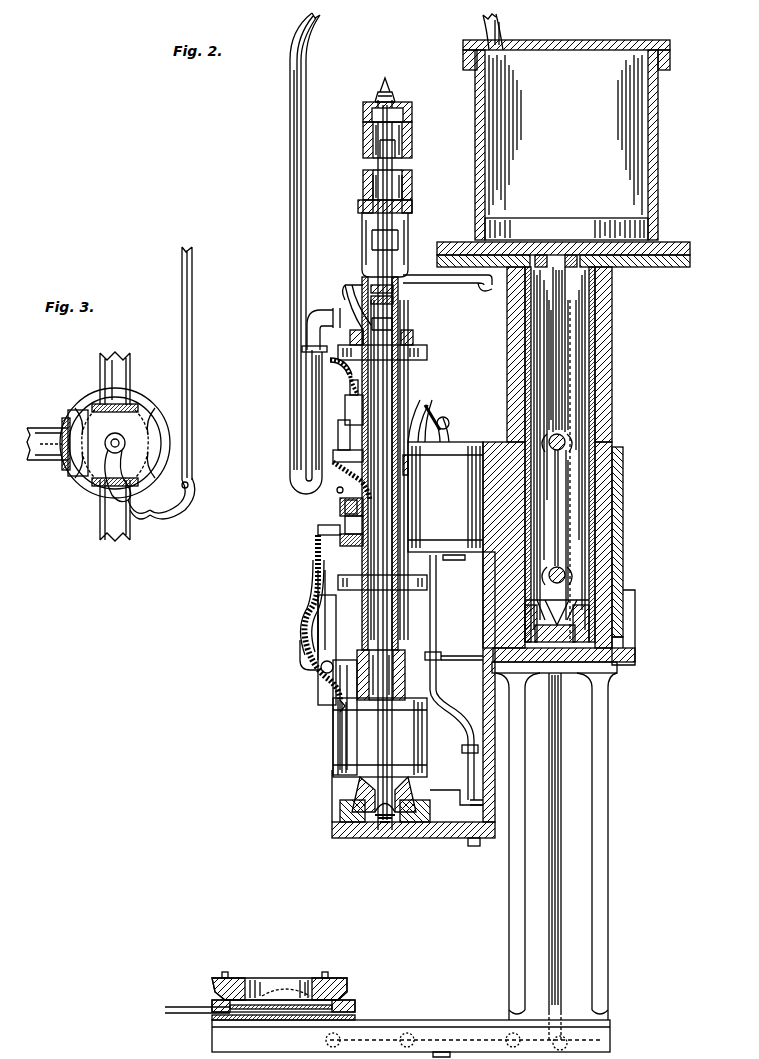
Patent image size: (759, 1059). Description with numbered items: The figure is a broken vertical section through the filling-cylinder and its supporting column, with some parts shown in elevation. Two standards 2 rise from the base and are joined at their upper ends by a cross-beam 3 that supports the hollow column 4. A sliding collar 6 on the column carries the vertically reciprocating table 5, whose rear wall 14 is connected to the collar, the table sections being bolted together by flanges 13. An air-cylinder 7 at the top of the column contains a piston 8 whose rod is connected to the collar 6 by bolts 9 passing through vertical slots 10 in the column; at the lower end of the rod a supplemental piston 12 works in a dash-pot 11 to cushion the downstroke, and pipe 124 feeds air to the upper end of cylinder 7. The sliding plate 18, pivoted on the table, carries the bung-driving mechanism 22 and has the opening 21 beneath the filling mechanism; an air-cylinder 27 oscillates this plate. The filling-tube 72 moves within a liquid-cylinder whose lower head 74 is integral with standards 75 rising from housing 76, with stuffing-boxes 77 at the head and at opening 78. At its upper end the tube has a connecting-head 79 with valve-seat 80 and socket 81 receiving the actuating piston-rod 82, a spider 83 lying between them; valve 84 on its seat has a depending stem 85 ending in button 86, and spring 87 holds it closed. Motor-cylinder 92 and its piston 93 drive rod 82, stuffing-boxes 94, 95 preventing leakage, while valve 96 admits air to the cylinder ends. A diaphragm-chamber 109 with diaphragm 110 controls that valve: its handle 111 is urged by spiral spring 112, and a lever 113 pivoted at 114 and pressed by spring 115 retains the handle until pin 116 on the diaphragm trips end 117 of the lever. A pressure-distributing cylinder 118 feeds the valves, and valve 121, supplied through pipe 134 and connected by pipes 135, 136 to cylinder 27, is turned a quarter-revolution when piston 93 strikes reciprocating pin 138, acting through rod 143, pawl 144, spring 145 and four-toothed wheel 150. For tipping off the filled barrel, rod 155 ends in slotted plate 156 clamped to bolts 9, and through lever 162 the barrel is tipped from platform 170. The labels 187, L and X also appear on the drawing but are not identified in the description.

In FIG. 2, the standards 2 is at (610, 898).
In FIG. 2, the cross-beam 3 is at (636, 660).
In FIG. 2, the hollow column 4 is at (613, 372).
In FIG. 2, the vertically-reciprocating table 5 is at (455, 840).
In FIG. 2, the sliding collar 6 is at (625, 500).
In FIG. 2, the air-cylinder 7 is at (658, 158).
In FIG. 2, the piston 8 is at (558, 226).
In FIG. 2, the bolts 9 is at (565, 442).
In FIG. 2, the vertical slots 10 is at (566, 325).
In FIG. 2, the dash-pot 11 is at (592, 548).
In FIG. 2, the supplemental piston 12 is at (636, 612).
In FIG. 2, the flanges 13 is at (402, 392).
In FIG. 2, the rear wall 14 is at (480, 610).
In FIG. 2, the sliding plate 18 is at (332, 825).
In FIG. 2, the opening 21 is at (475, 580).
In FIG. 2, the bung-driving mechanism 22 is at (315, 668).
In FIG. 2, the air-cylinder 27 is at (445, 445).
In FIG. 2, the filling-tube 72 is at (403, 332).
In FIG. 2, the lower head 74 is at (405, 684).
In FIG. 2, the standards 75 is at (405, 744).
In FIG. 2, the housing 76 is at (408, 790).
In FIG. 2, the stuffing-box 77 is at (340, 700).
In FIG. 2, the opening 78 is at (350, 782).
In FIG. 2, the connecting-head 79 is at (402, 310).
In FIG. 2, the valve-seat 80 is at (402, 324).
In FIG. 2, the socket 81 is at (345, 280).
In FIG. 2, the actuating piston-rod 82 is at (362, 233).
In FIG. 2, the spider 83 is at (350, 305).
In FIG. 2, the valve 84 is at (440, 302).
In FIG. 2, the depending stem 85 is at (401, 368).
In FIG. 2, the button 86 is at (383, 838).
In FIG. 2, the spring 87 is at (402, 298).
In FIG. 2, the motor-cylinder 92 is at (412, 140).
In FIG. 2, the piston 93 is at (412, 112).
In FIG. 2, the stuffing-box 94 is at (404, 220).
In FIG. 2, the stuffing-box 95 is at (400, 248).
In FIG. 2, the valve 96 is at (348, 390).
In FIG. 2, the diaphragm-chamber 109 is at (320, 540).
In FIG. 2, the diaphragm 110 is at (378, 522).
In FIG. 2, the handle 111 is at (333, 456).
In FIG. 2, the spiral spring 112 is at (345, 408).
In FIG. 2, the lever 113 is at (338, 492).
In FIG. 2, the pivot 114 is at (340, 505).
In FIG. 2, the spring 115 is at (420, 432).
In FIG. 2, the pin 116 is at (318, 560).
In FIG. 2, the end of lever 117 is at (345, 510).
In FIG. 2, the pressure-distributing cylinder 118 is at (340, 538).
In FIG. 3, the valve 121 is at (70, 470).
In FIG. 2, the pipe 124 is at (290, 126).
In FIG. 3, the pipe 134 is at (52, 428).
In FIG. 2, the pipe 135 is at (452, 424).
In FIG. 3, the pipe 135 is at (118, 355).
In FIG. 2, the pipe 136 is at (440, 595).
In FIG. 3, the pipe 136 is at (118, 538).
In FIG. 2, the reciprocating pin 138 is at (392, 96).
In FIG. 3, the rod 143 is at (192, 312).
In FIG. 3, the pawl 144 is at (190, 487).
In FIG. 3, the spring 145 is at (160, 505).
In FIG. 3, the four-toothed wheel 150 is at (95, 418).
In FIG. 2, the rod 155 is at (598, 778).
In FIG. 2, the slotted plate 156 is at (569, 410).
In FIG. 2, the lever 162 is at (335, 683).
In FIG. 2, the platform 170 is at (315, 977).
In FIG. 3, the valve plug lever 187 is at (112, 500).
In FIG. 2, the base L is at (390, 1030).
In FIG. 2, the point X is at (338, 432).